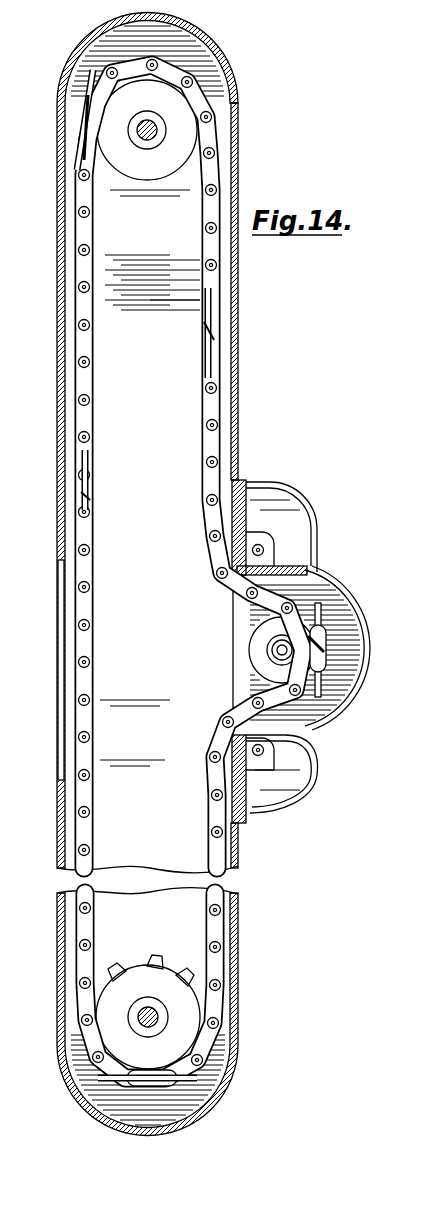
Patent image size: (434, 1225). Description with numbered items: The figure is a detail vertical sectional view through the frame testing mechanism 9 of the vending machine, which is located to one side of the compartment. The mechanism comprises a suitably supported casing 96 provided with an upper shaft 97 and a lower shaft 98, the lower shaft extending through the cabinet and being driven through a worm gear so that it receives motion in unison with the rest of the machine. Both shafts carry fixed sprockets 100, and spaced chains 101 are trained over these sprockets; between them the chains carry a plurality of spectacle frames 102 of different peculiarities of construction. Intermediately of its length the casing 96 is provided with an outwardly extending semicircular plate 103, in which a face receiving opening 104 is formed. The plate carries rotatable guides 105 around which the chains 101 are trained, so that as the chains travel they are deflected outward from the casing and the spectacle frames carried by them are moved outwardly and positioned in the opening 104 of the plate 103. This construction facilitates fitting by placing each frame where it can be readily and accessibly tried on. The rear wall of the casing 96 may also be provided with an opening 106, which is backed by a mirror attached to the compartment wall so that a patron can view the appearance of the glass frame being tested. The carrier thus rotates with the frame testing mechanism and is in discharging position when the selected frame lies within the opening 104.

The frame testing mechanism 9 is at (239, 366).
The casing 96 is at (238, 423).
The upper shaft 97 is at (143, 140).
The lower shaft 98 is at (148, 1010).
The sprocket 100 is at (175, 167).
The chain 101 is at (100, 647).
The spectacle frame 102 is at (93, 492).
The semicircular plate 103 is at (318, 568).
The face receiving opening 104 is at (312, 642).
The rotatable guide 105 is at (232, 547).
The opening 106 is at (58, 625).